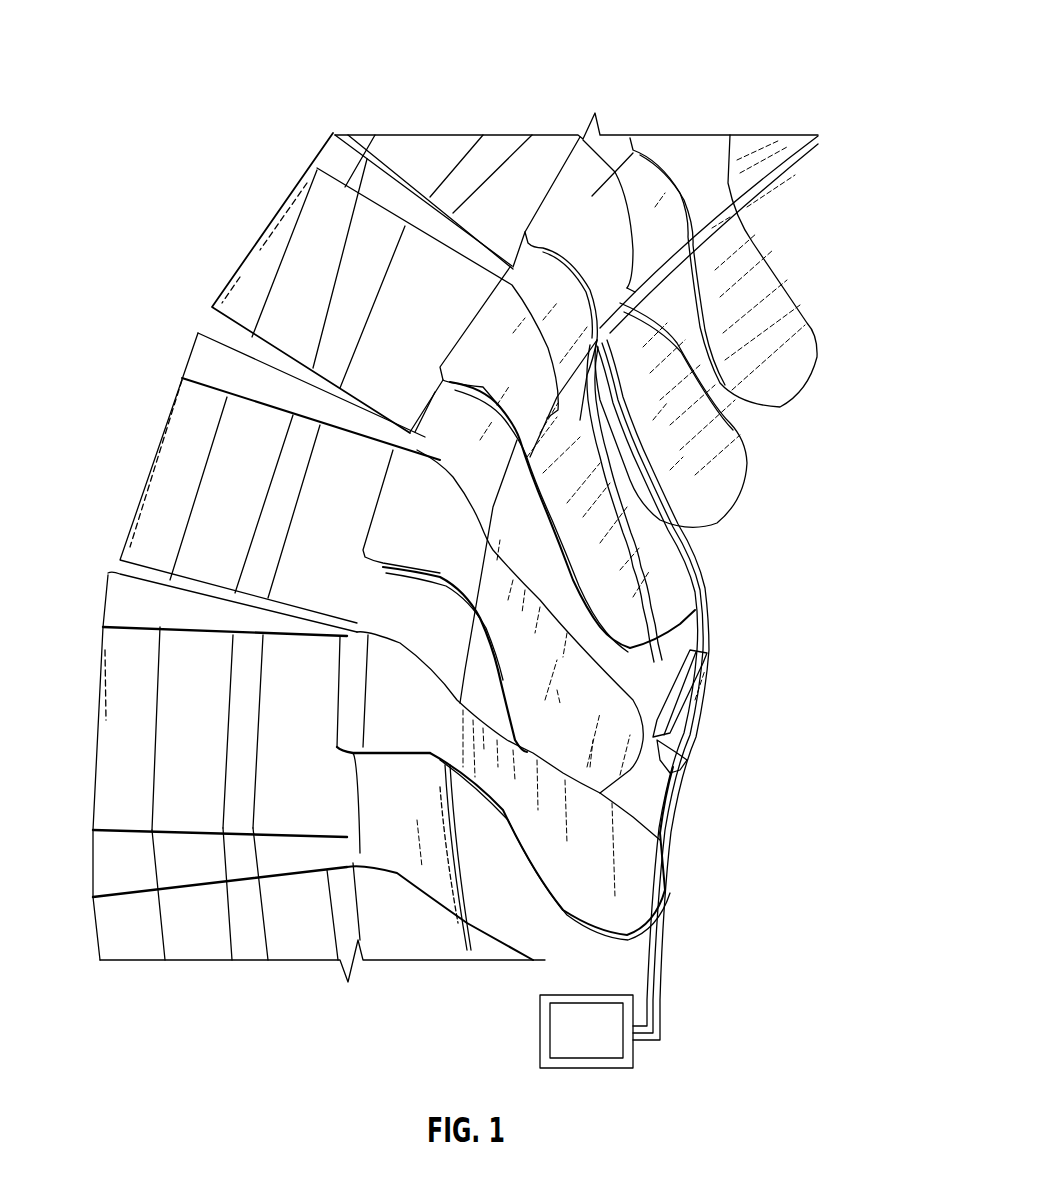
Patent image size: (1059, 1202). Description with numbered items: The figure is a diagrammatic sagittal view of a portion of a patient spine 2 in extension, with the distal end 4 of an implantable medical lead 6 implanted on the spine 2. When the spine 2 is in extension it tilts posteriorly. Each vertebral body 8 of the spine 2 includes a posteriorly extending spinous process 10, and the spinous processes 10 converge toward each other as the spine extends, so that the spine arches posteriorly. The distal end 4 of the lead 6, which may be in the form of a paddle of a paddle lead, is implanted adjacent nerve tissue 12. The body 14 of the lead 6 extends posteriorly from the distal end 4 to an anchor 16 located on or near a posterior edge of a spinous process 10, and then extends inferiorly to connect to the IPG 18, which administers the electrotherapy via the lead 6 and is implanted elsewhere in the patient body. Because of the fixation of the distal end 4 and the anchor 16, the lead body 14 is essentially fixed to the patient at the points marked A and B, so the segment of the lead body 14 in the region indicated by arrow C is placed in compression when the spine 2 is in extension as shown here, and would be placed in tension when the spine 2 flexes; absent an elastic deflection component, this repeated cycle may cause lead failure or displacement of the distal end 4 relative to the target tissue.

The patient spine 2 is at (706, 44).
The distal end 4 is at (681, 265).
The implantable medical lead 6 is at (696, 690).
The vertebral body 8 is at (407, 138).
The spinous process 10 is at (810, 327).
The nerve tissue 12 is at (748, 140).
The lead body 14 is at (672, 558).
The anchor 16 is at (703, 707).
The IPG 18 is at (595, 993).